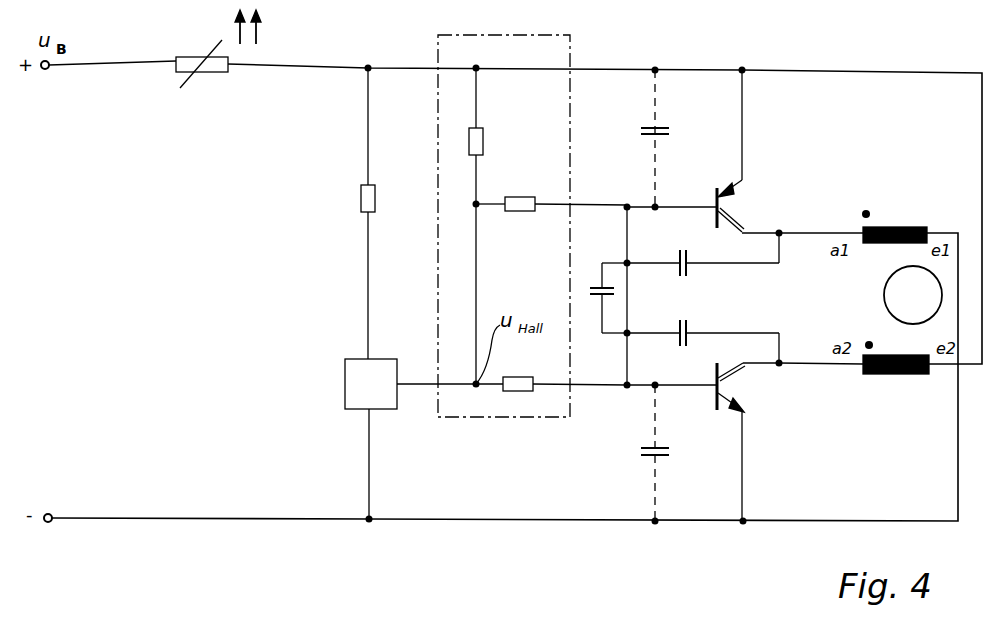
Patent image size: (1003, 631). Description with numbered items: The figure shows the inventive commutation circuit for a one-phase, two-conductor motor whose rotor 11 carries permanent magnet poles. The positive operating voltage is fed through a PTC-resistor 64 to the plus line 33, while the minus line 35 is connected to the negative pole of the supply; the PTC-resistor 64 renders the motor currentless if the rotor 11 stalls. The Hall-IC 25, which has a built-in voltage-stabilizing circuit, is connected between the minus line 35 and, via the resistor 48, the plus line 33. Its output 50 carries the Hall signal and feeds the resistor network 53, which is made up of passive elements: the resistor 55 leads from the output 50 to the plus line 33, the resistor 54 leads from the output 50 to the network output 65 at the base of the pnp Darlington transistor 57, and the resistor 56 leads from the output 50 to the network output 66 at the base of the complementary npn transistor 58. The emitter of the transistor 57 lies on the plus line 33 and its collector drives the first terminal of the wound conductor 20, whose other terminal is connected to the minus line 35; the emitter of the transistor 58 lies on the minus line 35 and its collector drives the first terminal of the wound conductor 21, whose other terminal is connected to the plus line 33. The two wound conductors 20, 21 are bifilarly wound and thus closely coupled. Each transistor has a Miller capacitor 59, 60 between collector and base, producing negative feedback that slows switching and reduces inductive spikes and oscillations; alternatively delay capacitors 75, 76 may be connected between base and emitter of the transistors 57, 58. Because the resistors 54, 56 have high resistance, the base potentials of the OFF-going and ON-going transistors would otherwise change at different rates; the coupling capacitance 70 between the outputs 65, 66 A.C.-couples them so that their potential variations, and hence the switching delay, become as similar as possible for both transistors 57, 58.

The rotor 11 is at (884, 293).
The wound conductor 20 is at (899, 227).
The wound conductor 21 is at (900, 374).
The Hall-IC 25 is at (350, 359).
The plus line 33 is at (710, 70).
The minus line 35 is at (610, 521).
The resistor 48 is at (376, 199).
The output of the Hall-IC 50 is at (476, 384).
The resistor network 53 is at (576, 37).
The resistor 54 is at (520, 211).
The resistor 55 is at (483, 140).
The resistor 56 is at (524, 377).
The pnp Darlington transistor 57 is at (716, 192).
The npn transistor 58 is at (716, 398).
The Miller capacitor 59 is at (688, 262).
The Miller capacitor 60 is at (688, 333).
The PTC-resistor 64 is at (220, 74).
The output of the network 65 is at (627, 205).
The output of the network 66 is at (628, 388).
The coupling capacitance 70 is at (598, 287).
The delay capacitor 75 is at (668, 130).
The delay capacitor 76 is at (652, 458).